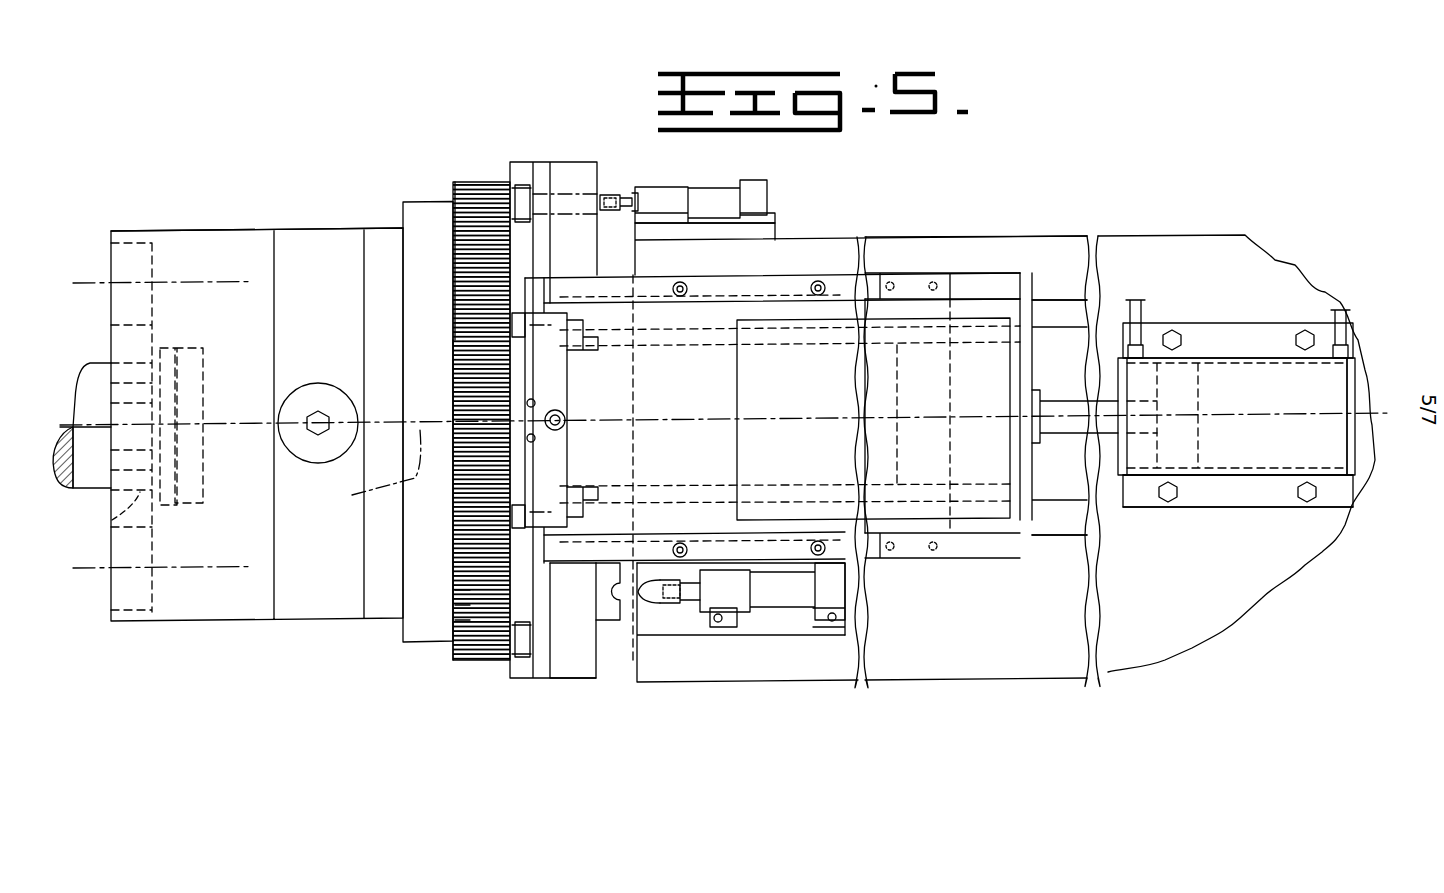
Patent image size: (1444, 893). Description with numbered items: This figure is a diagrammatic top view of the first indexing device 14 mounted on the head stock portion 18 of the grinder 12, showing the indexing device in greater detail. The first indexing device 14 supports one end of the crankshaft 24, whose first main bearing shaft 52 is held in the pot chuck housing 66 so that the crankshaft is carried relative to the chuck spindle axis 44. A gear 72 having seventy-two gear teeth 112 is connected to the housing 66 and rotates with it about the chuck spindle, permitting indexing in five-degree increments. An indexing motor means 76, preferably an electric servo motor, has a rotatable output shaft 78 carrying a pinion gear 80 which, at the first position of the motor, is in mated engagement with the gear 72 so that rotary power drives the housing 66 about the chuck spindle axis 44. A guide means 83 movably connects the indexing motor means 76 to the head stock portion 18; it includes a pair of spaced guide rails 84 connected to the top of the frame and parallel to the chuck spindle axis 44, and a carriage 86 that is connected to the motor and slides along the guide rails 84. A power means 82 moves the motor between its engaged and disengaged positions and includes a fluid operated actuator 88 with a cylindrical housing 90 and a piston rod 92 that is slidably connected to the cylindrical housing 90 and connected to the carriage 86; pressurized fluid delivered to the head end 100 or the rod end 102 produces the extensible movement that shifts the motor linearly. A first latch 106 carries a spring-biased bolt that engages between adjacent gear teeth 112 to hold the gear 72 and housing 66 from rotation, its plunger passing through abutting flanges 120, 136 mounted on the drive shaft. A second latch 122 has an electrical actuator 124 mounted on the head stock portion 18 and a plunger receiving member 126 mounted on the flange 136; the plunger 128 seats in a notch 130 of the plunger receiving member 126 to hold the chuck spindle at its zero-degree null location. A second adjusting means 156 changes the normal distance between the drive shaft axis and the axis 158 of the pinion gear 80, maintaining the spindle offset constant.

The grinder 12 is at (1180, 655).
The first indexing device 14 is at (368, 190).
The head stock portion 18 is at (988, 631).
The crankshaft 24 is at (77, 372).
The chuck spindle axis 44 is at (250, 410).
The first main bearing shaft 52 is at (106, 517).
The housing 66 is at (250, 621).
The gear 72 is at (470, 184).
The indexing motor means 76 is at (946, 570).
The rotatable output shaft 78 is at (530, 403).
The pinion gear 80 is at (453, 345).
The power means 82 is at (1362, 368).
The guide means 83 is at (908, 270).
The guide rails 84 is at (1100, 305).
The carriage 86 is at (1028, 271).
The fluid operated actuator 88 is at (1255, 398).
The cylindrical housing 90 is at (1333, 477).
The piston rod 92 is at (1070, 400).
The head end 100 is at (1138, 448).
The rod end 102 is at (1343, 452).
The first latch 106 is at (775, 186).
The gear teeth 112 is at (455, 620).
The flange 120 is at (540, 668).
The second latch 122 is at (732, 642).
The electrical actuator 124 is at (765, 607).
The plunger receiving member 126 is at (613, 622).
The plunger 128 is at (668, 603).
The notch 130 is at (638, 594).
The flange 136 is at (578, 668).
The second adjusting means 156 is at (568, 426).
The axis of the pinion gear 158 is at (364, 467).